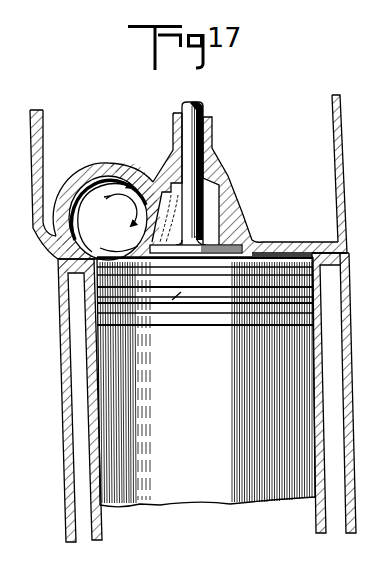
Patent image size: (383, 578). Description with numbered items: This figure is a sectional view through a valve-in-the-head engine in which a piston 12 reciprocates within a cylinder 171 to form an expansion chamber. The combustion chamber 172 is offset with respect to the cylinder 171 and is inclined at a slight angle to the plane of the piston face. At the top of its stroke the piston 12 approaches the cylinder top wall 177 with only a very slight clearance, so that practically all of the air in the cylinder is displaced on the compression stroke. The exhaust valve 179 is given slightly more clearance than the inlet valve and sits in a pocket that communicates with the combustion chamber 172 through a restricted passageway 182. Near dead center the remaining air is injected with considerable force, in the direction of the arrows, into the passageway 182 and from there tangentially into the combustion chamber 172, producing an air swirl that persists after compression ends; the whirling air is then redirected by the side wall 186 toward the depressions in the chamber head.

The piston 12 is at (205, 450).
The cylinder 171 is at (103, 530).
The combustion chamber 172 is at (108, 218).
The cylinder top wall 177 is at (293, 262).
The exhaust valve 179 is at (208, 208).
The restricted passageway 182 is at (152, 258).
The side wall 186 is at (87, 173).